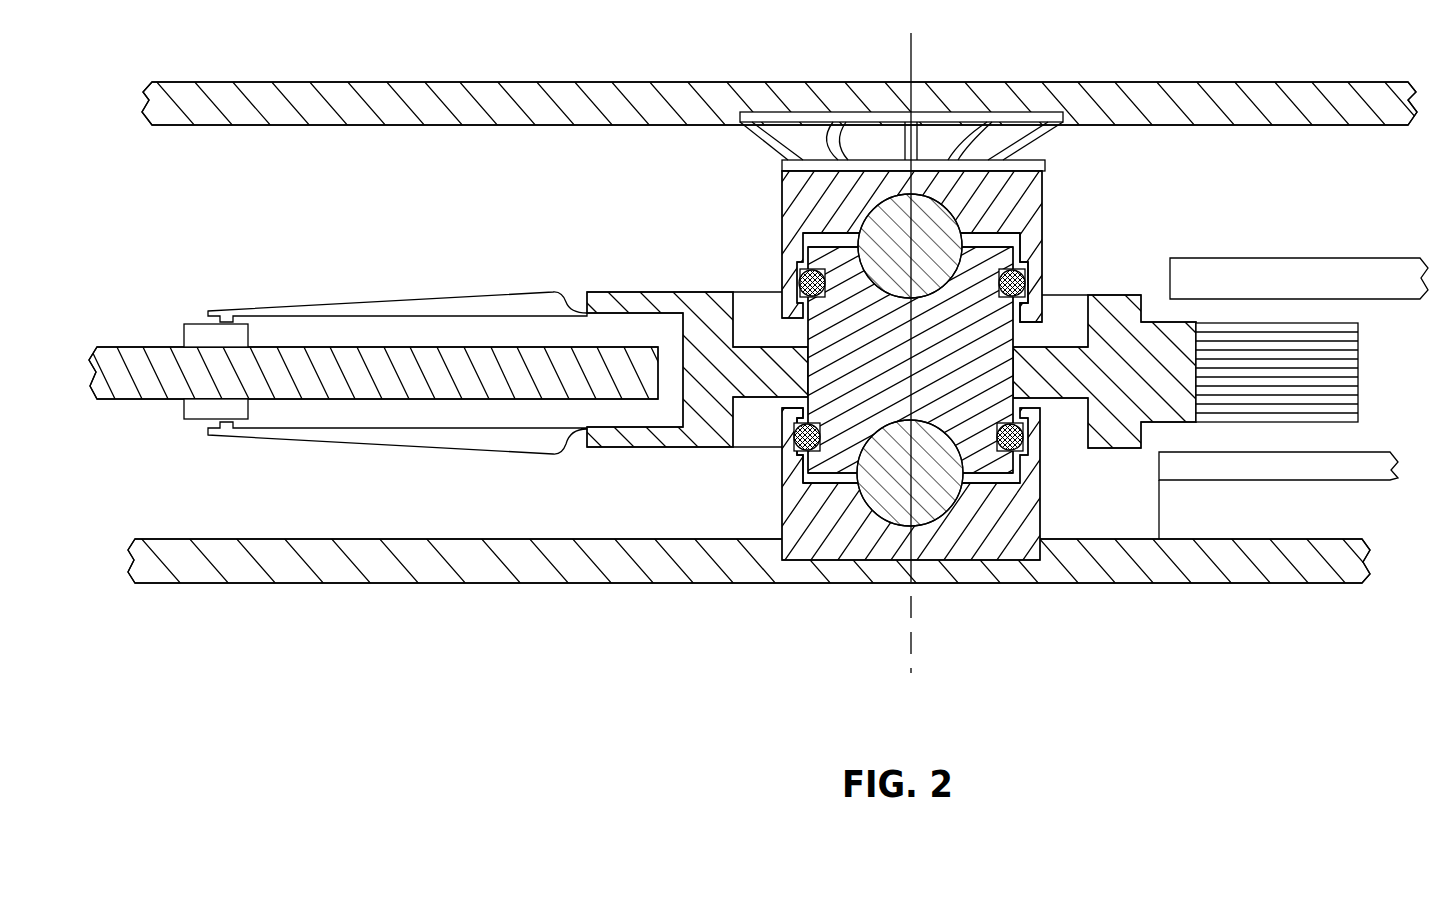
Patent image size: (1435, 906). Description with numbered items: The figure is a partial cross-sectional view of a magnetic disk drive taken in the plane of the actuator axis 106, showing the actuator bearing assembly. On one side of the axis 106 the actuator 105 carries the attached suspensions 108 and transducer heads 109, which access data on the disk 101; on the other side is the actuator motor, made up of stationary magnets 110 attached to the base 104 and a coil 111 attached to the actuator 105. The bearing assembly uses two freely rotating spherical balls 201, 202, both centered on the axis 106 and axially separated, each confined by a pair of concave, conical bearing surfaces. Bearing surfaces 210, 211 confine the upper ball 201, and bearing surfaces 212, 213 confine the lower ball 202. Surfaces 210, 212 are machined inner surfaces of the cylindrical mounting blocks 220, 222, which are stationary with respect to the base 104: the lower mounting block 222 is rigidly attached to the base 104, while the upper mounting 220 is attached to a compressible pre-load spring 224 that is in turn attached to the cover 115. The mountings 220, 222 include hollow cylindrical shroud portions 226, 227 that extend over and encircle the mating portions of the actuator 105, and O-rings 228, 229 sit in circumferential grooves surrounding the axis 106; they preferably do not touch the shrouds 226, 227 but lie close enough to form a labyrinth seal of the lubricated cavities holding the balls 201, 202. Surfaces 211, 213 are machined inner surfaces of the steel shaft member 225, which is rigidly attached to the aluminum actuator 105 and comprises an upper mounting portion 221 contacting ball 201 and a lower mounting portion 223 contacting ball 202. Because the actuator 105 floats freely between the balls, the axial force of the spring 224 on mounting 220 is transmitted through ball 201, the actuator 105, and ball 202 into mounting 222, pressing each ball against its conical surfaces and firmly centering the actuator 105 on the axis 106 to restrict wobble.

The disk 101 is at (123, 388).
The base 104 is at (1264, 570).
The actuator 105 is at (713, 367).
The actuator axis 106 is at (912, 48).
The suspensions 108 is at (386, 301).
The transducer heads 109 is at (207, 324).
The stationary magnets 110 is at (1297, 288).
The coil 111 is at (1358, 382).
The cover 115 is at (1340, 110).
The spherical ball 201 is at (910, 246).
The spherical ball 202 is at (868, 470).
The bearing surface 210 is at (866, 246).
The bearing surface 211 is at (988, 237).
The bearing surface 212 is at (911, 524).
The bearing surface 213 is at (799, 559).
The upper mounting block 220 is at (979, 200).
The upper mounting portion 221 is at (939, 311).
The lower mounting block 222 is at (946, 544).
The lower mounting portion 223 is at (926, 426).
The compressible pre-load spring 224 is at (1048, 126).
The shaft member 225 is at (910, 349).
The shroud portion 226 is at (781, 233).
The shroud portion 227 is at (781, 408).
The O-ring 228 is at (1026, 284).
The O-ring 229 is at (1012, 468).